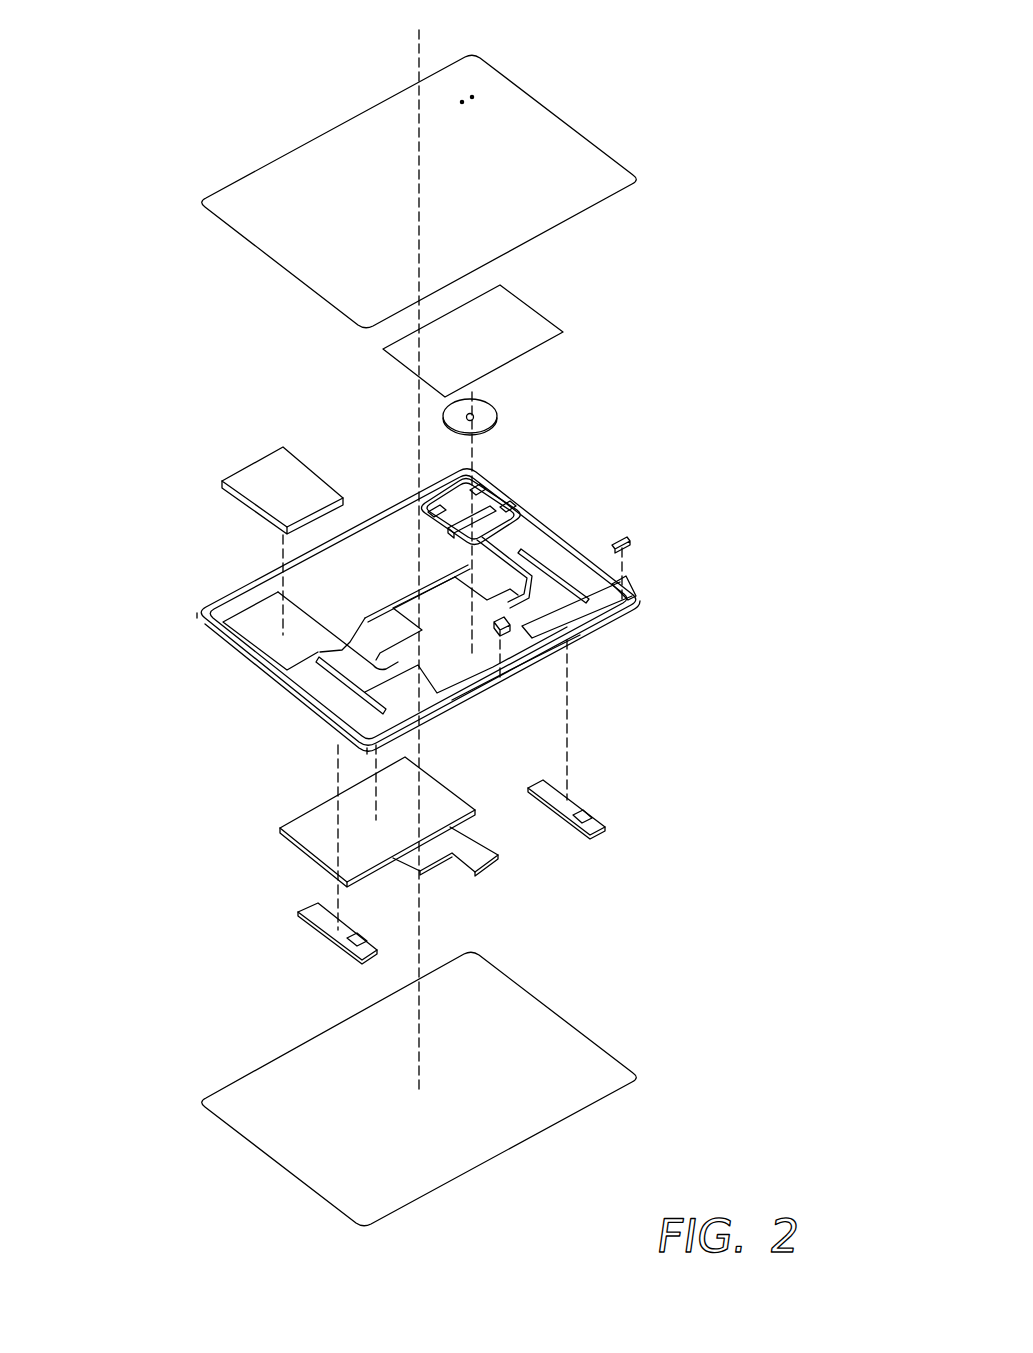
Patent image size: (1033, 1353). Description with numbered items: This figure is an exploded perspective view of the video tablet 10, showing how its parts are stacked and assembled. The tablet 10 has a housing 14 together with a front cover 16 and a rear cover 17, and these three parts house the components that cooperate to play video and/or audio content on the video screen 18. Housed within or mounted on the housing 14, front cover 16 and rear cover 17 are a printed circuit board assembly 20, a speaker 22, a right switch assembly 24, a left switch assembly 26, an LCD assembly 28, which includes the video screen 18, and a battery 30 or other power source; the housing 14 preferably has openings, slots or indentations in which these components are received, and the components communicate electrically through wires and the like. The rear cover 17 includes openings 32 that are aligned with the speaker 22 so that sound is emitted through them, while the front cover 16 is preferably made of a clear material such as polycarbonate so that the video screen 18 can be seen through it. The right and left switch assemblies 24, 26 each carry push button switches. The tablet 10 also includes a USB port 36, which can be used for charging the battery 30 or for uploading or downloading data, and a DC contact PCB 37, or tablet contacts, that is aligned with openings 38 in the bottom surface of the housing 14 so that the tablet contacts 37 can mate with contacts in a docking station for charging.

The video tablet 10 is at (110, 116).
The housing 14 is at (555, 543).
The front cover 16 is at (575, 1053).
The rear cover 17 is at (583, 172).
The video screen 18 is at (310, 818).
The printed circuit board assembly 20 is at (505, 325).
The speaker 22 is at (487, 420).
The right switch assembly 24 is at (315, 912).
The left switch assembly 26 is at (575, 808).
The LCD assembly 28 is at (215, 802).
The battery 30 is at (245, 483).
The openings 32 is at (480, 92).
The USB port 36 is at (502, 624).
The DC contact PCB 37 is at (632, 538).
The openings 38 is at (630, 607).